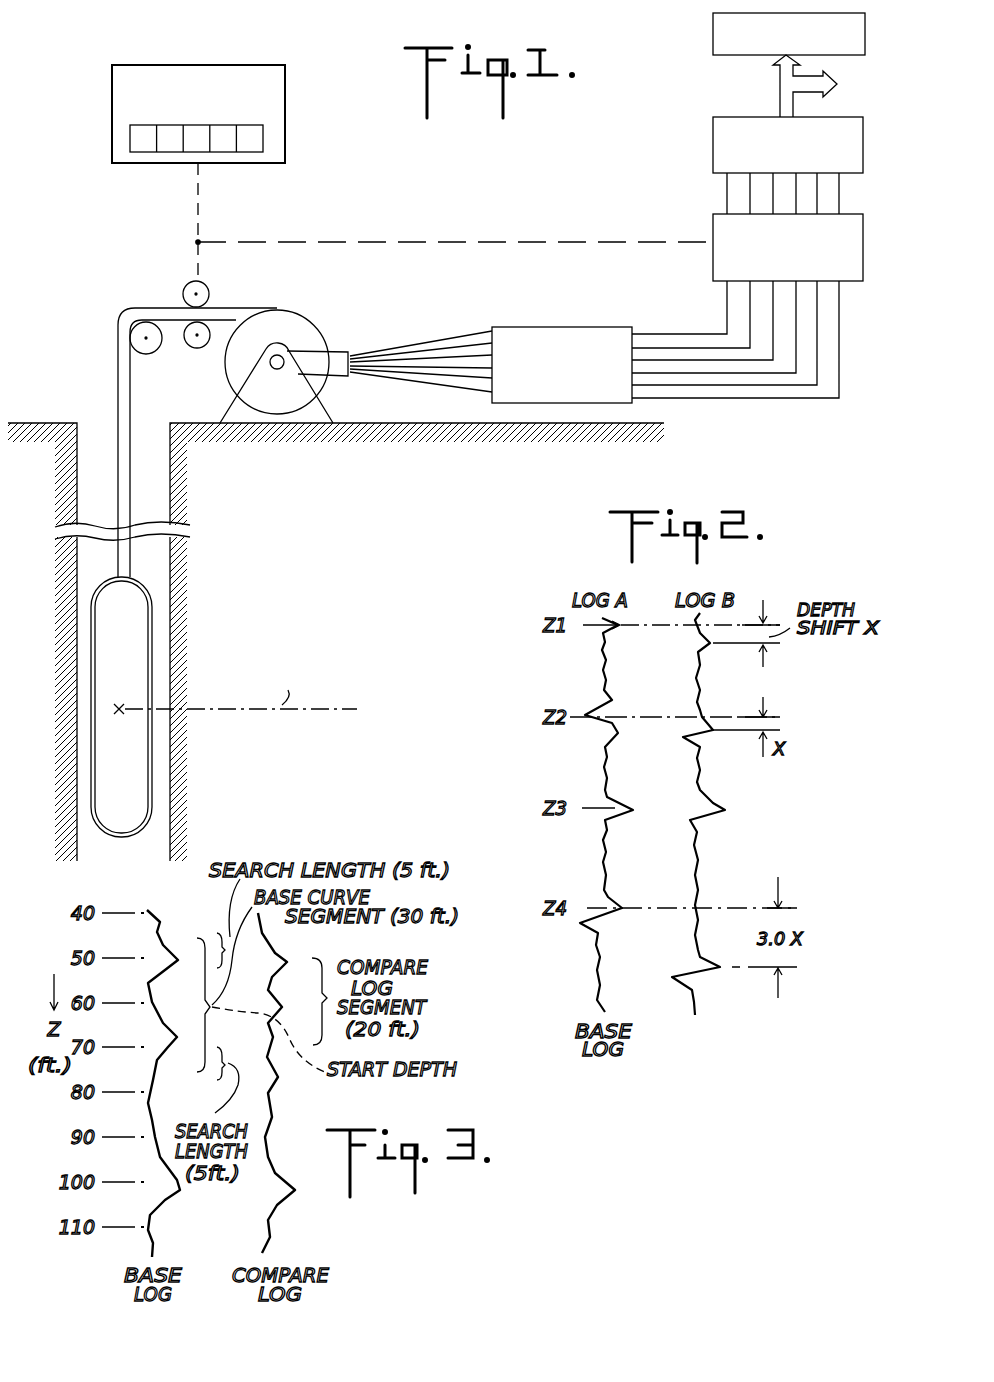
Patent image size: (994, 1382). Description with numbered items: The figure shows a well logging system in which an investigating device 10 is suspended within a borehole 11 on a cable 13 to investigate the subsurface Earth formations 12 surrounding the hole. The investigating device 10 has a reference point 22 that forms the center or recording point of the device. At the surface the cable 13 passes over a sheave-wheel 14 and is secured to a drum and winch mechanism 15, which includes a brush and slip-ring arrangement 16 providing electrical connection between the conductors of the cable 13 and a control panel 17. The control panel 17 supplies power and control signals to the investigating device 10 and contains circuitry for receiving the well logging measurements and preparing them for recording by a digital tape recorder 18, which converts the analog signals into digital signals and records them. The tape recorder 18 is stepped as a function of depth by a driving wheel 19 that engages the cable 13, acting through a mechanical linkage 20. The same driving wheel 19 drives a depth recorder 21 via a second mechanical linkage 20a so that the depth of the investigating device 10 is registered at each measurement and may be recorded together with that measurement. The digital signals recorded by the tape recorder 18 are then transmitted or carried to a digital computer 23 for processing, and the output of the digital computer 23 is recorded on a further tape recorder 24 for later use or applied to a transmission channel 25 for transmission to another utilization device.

The investigating device 10 is at (132, 642).
The borehole 11 is at (172, 474).
The subsurface Earth formations 12 is at (206, 788).
The cable 13 is at (123, 415).
The sheave-wheel 14 is at (143, 345).
The drum and winch mechanism 15 is at (313, 410).
The brush and slip-ring arrangement 16 is at (286, 334).
The control panel 17 is at (563, 327).
The digital tape recorder 18 is at (863, 246).
The driving wheel 19 is at (203, 286).
The mechanical linkage 20 is at (383, 242).
The mechanical linkage 20a is at (200, 200).
The depth recorder 21 is at (287, 117).
The reference point 22 is at (116, 712).
The digital computer 23 is at (863, 134).
The tape recorder 24 is at (865, 32).
The transmission channel 25 is at (815, 92).